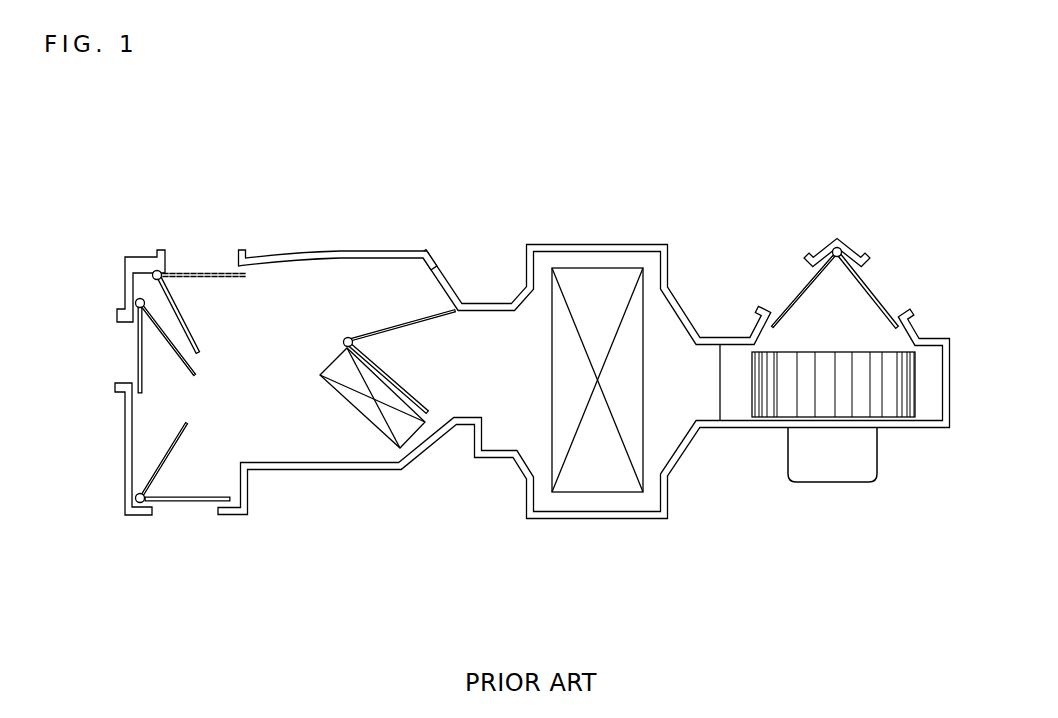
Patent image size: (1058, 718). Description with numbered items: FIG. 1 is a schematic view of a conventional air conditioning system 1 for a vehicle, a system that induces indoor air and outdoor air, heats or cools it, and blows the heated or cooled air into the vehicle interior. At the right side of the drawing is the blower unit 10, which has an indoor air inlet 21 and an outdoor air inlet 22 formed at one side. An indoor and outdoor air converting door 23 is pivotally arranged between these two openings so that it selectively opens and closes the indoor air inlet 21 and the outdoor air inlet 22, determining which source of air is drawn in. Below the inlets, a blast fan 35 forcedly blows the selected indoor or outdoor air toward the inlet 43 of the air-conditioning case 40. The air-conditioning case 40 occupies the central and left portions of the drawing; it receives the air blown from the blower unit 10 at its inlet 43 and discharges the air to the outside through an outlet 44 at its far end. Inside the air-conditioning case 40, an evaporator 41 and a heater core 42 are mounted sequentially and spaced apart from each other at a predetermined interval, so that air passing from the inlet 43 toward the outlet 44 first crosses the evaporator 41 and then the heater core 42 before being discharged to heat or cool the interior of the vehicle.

The air conditioner for vehicle (HVAC unit) 1 is at (623, 168).
The blower unit 10 is at (860, 233).
The indoor air inlet 21 is at (880, 280).
The outdoor air inlet 22 is at (782, 287).
The indoor and outdoor air converting door 23 is at (882, 297).
The blast fan 35 is at (833, 405).
The air-conditioning case 40 is at (369, 240).
The evaporator 41 is at (632, 405).
The heater core 42 is at (355, 407).
The inlet 43 is at (707, 358).
The outlet 44 is at (198, 262).